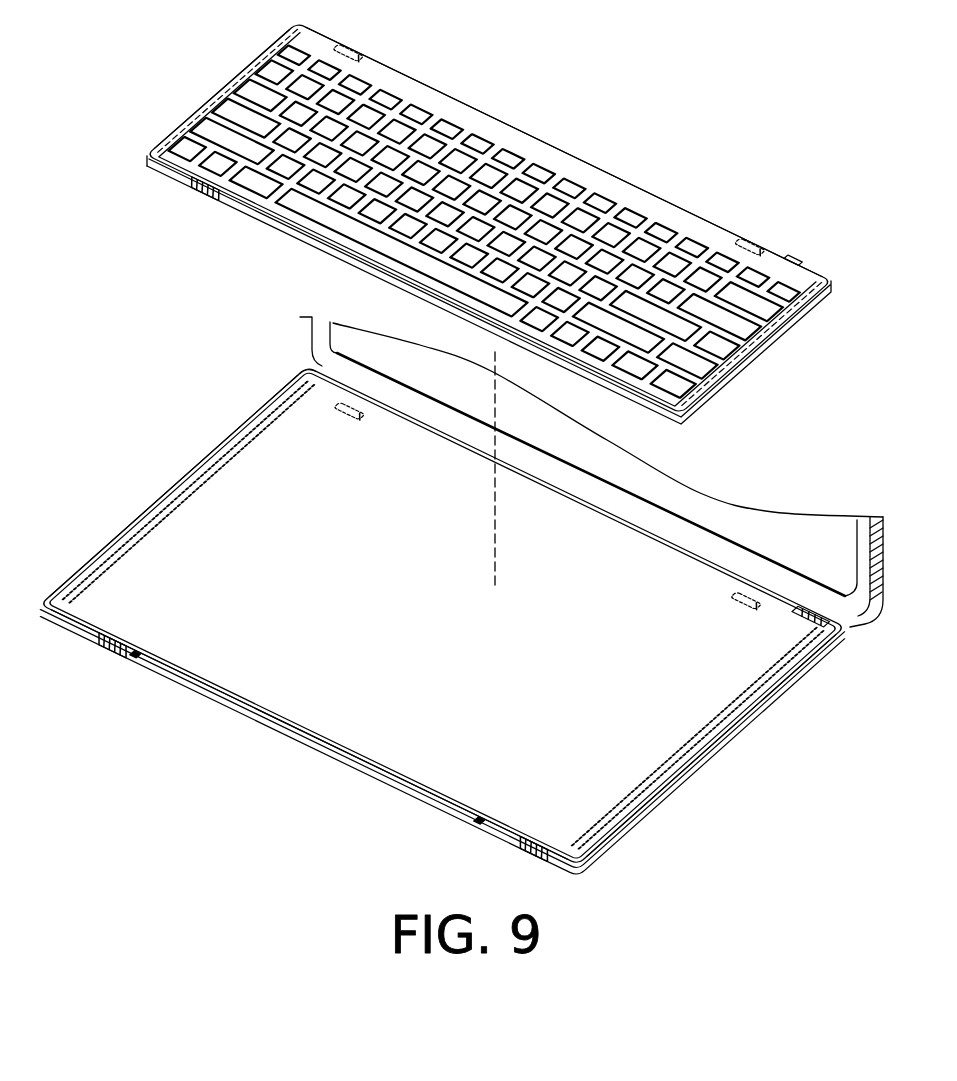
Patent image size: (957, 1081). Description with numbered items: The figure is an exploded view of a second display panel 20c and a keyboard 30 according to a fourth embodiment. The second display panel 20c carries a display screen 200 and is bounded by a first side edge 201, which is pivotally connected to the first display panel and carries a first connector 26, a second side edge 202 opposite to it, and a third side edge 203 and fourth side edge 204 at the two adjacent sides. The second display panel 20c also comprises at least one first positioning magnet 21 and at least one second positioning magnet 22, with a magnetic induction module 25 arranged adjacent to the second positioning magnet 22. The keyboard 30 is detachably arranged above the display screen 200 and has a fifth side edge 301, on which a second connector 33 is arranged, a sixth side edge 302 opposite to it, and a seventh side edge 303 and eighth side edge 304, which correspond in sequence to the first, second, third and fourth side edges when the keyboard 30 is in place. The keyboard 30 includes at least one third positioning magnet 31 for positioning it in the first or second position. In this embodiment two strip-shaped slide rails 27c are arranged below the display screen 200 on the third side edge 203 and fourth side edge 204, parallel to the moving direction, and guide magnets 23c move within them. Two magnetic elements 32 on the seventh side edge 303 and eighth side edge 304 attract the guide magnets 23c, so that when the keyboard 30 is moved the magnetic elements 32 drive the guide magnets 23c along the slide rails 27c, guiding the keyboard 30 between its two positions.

The keyboard 30 is at (567, 143).
The fifth side edge 301 is at (676, 204).
The sixth side edge 302 is at (146, 168).
The seventh side edge 303 is at (754, 364).
The eighth side edge 304 is at (230, 82).
The third positioning magnet 31 is at (350, 47).
The magnetic element 32 is at (279, 54).
The second connector 33 is at (806, 263).
The second display panel 20c is at (226, 413).
The display screen 200 is at (386, 772).
The first side edge 201 is at (304, 369).
The second side edge 202 is at (324, 739).
The third side edge 203 is at (784, 688).
The fourth side edge 204 is at (122, 530).
The first positioning magnet 21 is at (340, 412).
The second positioning magnet 22 is at (92, 632).
The guide magnet 23c is at (190, 478).
The magnetic induction module 25 is at (138, 653).
The first connector 26 is at (826, 636).
The slide rail 27c is at (162, 500).